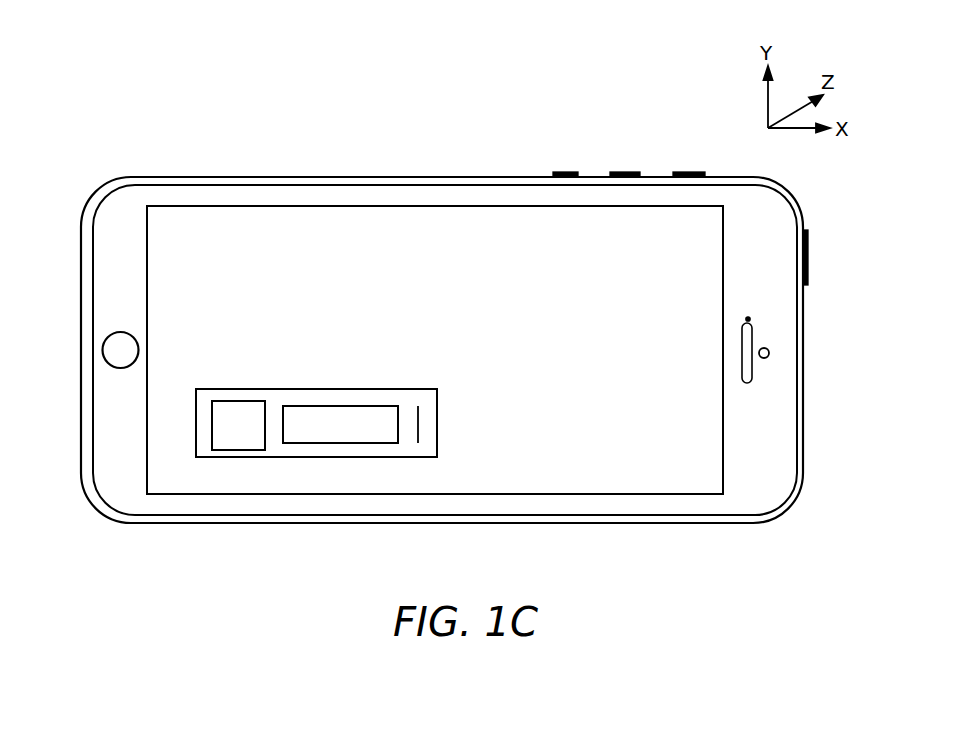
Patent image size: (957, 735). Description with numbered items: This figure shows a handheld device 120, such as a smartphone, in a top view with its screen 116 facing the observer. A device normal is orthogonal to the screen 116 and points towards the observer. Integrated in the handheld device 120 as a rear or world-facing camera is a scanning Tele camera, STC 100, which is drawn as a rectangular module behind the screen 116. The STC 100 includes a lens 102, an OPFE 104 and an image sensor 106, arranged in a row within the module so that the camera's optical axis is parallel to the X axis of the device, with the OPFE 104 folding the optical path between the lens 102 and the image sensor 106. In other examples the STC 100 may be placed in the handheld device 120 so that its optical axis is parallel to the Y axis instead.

The STC 100 is at (198, 457).
The lens 102 is at (348, 443).
The OPFE 104 is at (245, 450).
The image sensor 106 is at (418, 443).
The screen 116 is at (588, 224).
The handheld device 120 is at (127, 149).